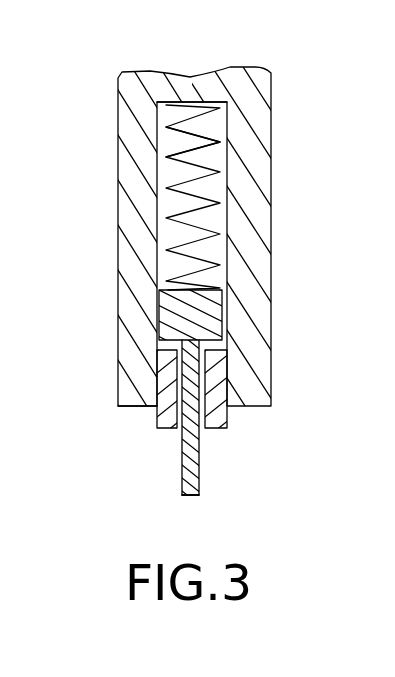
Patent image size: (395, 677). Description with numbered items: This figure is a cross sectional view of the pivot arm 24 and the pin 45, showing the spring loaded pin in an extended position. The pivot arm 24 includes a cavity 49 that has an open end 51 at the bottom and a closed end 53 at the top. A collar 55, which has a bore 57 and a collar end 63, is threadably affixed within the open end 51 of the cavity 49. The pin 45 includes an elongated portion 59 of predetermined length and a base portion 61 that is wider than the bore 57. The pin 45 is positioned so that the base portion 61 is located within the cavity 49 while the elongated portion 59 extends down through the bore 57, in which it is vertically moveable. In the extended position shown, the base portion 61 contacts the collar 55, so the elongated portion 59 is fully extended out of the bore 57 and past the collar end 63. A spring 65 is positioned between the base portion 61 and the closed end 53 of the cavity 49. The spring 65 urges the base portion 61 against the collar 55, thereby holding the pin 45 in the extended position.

The pivot arm 24 is at (267, 88).
The closed end 53 is at (187, 101).
The cavity 49 is at (210, 192).
The spring 65 is at (170, 150).
The base portion 61 is at (212, 317).
The bore 57 is at (200, 432).
The elongated portion 59 is at (198, 487).
The collar end 63 is at (163, 429).
The collar 55 is at (221, 427).
The open end 51 is at (143, 420).
The pin 45 is at (168, 492).